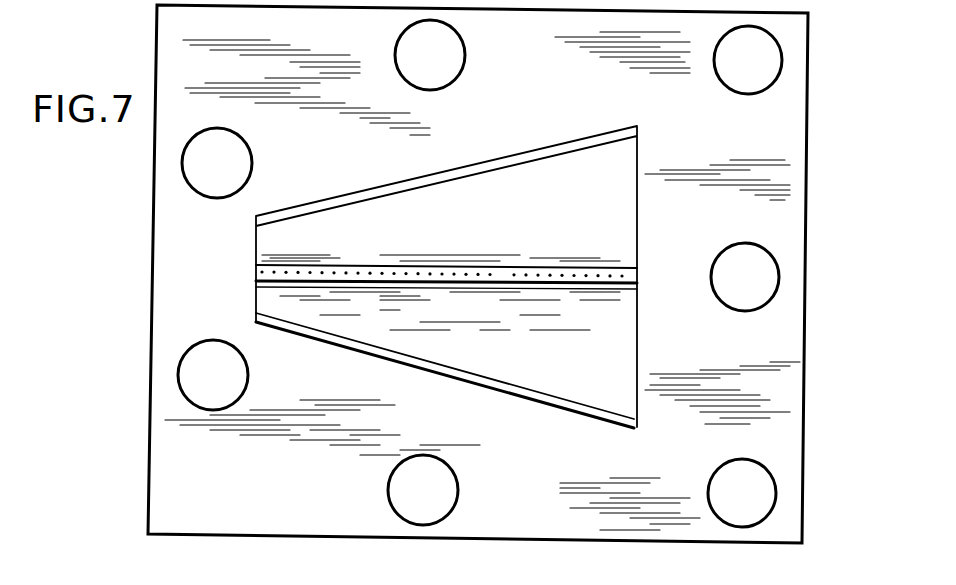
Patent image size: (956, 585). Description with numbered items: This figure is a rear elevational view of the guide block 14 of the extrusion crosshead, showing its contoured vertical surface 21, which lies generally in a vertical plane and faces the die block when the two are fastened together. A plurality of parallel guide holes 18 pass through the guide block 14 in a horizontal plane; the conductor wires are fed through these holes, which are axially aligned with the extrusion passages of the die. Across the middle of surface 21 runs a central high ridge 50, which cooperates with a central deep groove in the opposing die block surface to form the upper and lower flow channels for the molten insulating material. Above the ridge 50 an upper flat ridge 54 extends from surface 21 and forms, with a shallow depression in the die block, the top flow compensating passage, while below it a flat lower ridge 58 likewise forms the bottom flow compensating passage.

The guide block 14 is at (762, 435).
The guide holes 18 is at (326, 273).
The vertical surface 21 is at (534, 470).
The central high ridge 50 is at (542, 263).
The upper flat ridge 54 is at (567, 211).
The flat lower ridge 58 is at (608, 375).